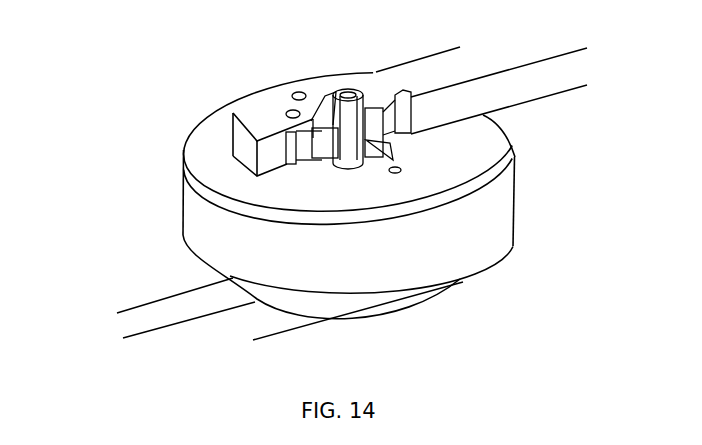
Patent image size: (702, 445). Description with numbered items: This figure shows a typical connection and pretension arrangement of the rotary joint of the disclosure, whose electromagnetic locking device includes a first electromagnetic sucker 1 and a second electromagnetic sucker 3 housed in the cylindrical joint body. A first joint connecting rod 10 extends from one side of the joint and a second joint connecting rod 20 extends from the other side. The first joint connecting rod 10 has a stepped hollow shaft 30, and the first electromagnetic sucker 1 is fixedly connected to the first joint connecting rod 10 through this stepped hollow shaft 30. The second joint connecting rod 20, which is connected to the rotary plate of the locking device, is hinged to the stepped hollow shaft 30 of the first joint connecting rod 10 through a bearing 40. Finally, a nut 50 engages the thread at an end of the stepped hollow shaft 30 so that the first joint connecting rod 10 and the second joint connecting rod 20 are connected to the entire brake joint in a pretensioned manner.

The first electromagnetic sucker 1 is at (467, 280).
The second electromagnetic sucker 3 is at (198, 237).
The first joint connecting rod 10 is at (145, 323).
The second joint connecting rod 20 is at (447, 75).
The stepped hollow shaft 30 is at (270, 153).
The bearing 40 is at (288, 121).
The nut 50 is at (336, 88).